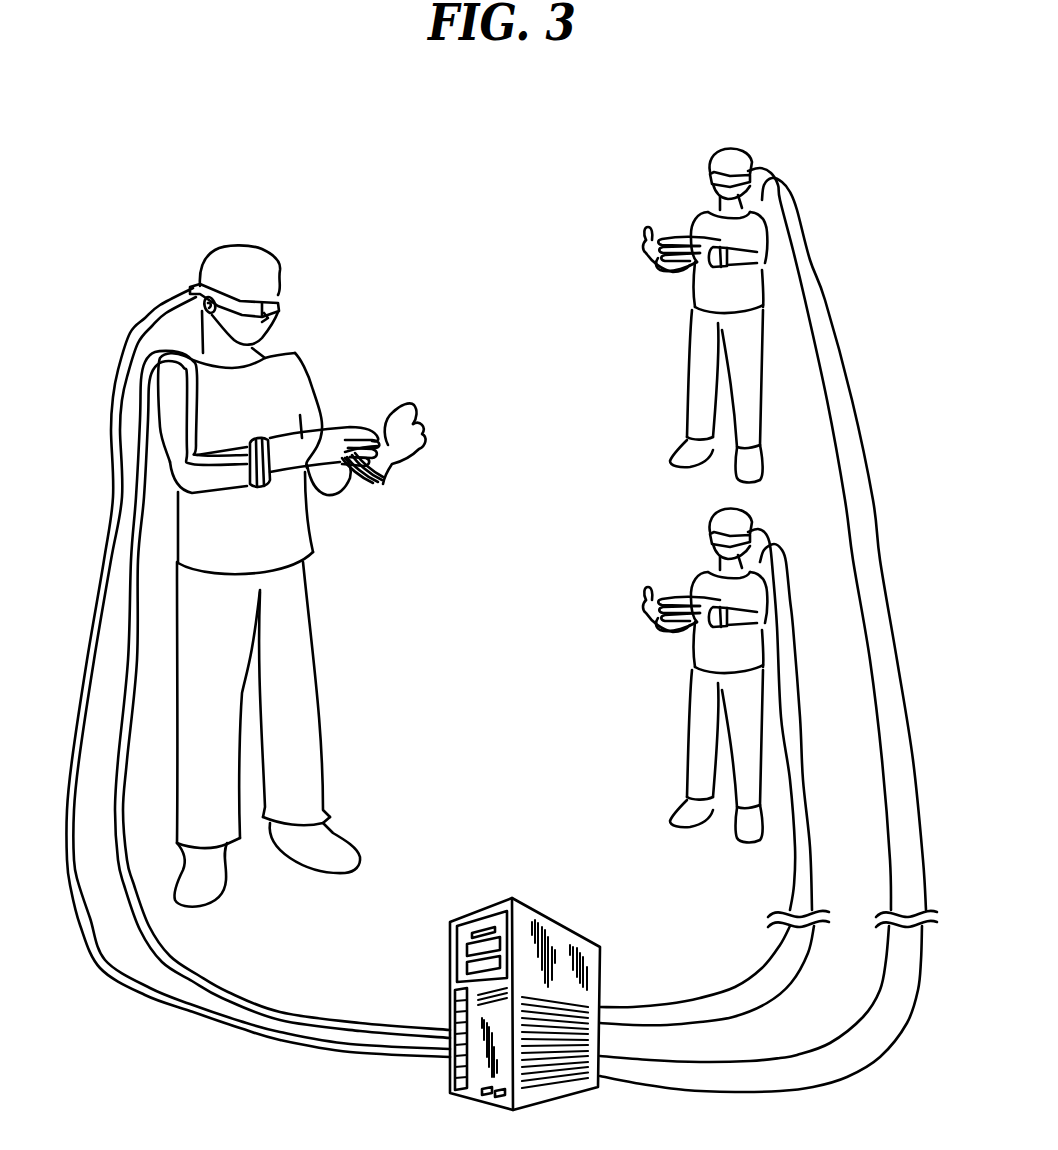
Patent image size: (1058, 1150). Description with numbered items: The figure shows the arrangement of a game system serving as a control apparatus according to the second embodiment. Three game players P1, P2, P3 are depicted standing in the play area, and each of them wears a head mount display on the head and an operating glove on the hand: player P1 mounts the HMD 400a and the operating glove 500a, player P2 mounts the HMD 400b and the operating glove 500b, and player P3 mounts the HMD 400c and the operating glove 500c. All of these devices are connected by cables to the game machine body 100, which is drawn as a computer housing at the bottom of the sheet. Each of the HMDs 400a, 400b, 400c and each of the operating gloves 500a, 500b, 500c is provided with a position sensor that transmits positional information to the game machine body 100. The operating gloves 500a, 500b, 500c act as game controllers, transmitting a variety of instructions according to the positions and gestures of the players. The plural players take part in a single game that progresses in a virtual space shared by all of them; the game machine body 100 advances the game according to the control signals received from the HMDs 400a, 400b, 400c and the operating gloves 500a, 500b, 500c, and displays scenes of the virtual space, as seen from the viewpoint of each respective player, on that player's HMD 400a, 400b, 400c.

The game machine body 100 is at (470, 1101).
The HMD (Head Mount Display) 400a is at (277, 300).
The HMD (Head Mount Display) 400b is at (707, 540).
The HMD (Head Mount Display) 400c is at (707, 180).
The operating glove 500a is at (421, 427).
The operating glove 500b is at (641, 608).
The operating glove 500c is at (641, 248).
The game player P1 is at (303, 648).
The game player P2 is at (697, 717).
The game player P3 is at (697, 357).